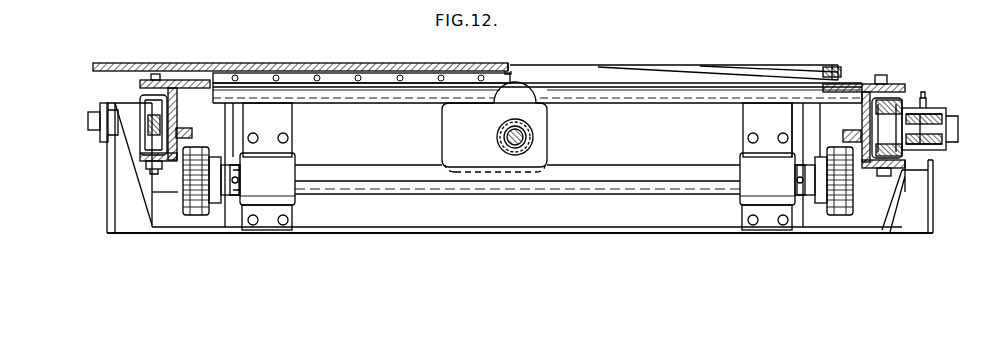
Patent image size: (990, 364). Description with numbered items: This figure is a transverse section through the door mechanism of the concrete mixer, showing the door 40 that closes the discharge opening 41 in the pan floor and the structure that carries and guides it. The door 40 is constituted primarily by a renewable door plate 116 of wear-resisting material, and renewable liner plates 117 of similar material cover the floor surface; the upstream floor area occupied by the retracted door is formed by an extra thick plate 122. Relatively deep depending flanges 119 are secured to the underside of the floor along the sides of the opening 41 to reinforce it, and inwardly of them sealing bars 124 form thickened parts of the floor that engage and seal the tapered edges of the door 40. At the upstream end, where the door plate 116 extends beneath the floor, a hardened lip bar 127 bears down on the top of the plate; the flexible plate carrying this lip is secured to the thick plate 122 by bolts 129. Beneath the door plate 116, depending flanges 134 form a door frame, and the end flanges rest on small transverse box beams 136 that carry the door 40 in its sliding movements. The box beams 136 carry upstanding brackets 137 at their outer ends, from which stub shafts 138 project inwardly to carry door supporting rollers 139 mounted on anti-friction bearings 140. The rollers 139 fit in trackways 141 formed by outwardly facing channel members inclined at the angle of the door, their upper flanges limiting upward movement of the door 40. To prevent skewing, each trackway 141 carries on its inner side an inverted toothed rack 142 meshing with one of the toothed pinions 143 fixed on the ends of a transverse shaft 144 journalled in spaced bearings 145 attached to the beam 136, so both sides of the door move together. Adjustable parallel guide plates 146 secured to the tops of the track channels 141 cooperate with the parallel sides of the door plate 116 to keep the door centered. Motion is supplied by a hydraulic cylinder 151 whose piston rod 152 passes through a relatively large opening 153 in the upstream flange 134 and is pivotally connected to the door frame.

The door 40 is at (727, 73).
The discharge opening 41 is at (755, 69).
The renewable door plate 116 is at (673, 66).
The renewable liner plates 117 is at (836, 66).
The depending flanges 119 is at (517, 130).
The extra thick plate 122 is at (99, 72).
The sealing bars 124 is at (812, 57).
The hardened lip bar 127 is at (654, 92).
The bolts 129 is at (358, 84).
The depending flanges 134 is at (494, 127).
The box beams 136 is at (295, 232).
The upstanding brackets 137 is at (112, 216).
The stub shafts 138 is at (90, 120).
The door supporting rollers 139 is at (150, 118).
The anti-friction bearings 140 is at (888, 165).
The trackways 141 is at (150, 160).
The inverted toothed rack 142 is at (185, 128).
The toothed pinions 143 is at (192, 212).
The transverse shaft 144 is at (552, 194).
The bearings 145 is at (288, 168).
The adjustable parallel guide plates 146 is at (193, 79).
The hydraulic cylinder 151 is at (534, 134).
The piston rod 152 is at (506, 136).
The opening 153 is at (442, 162).